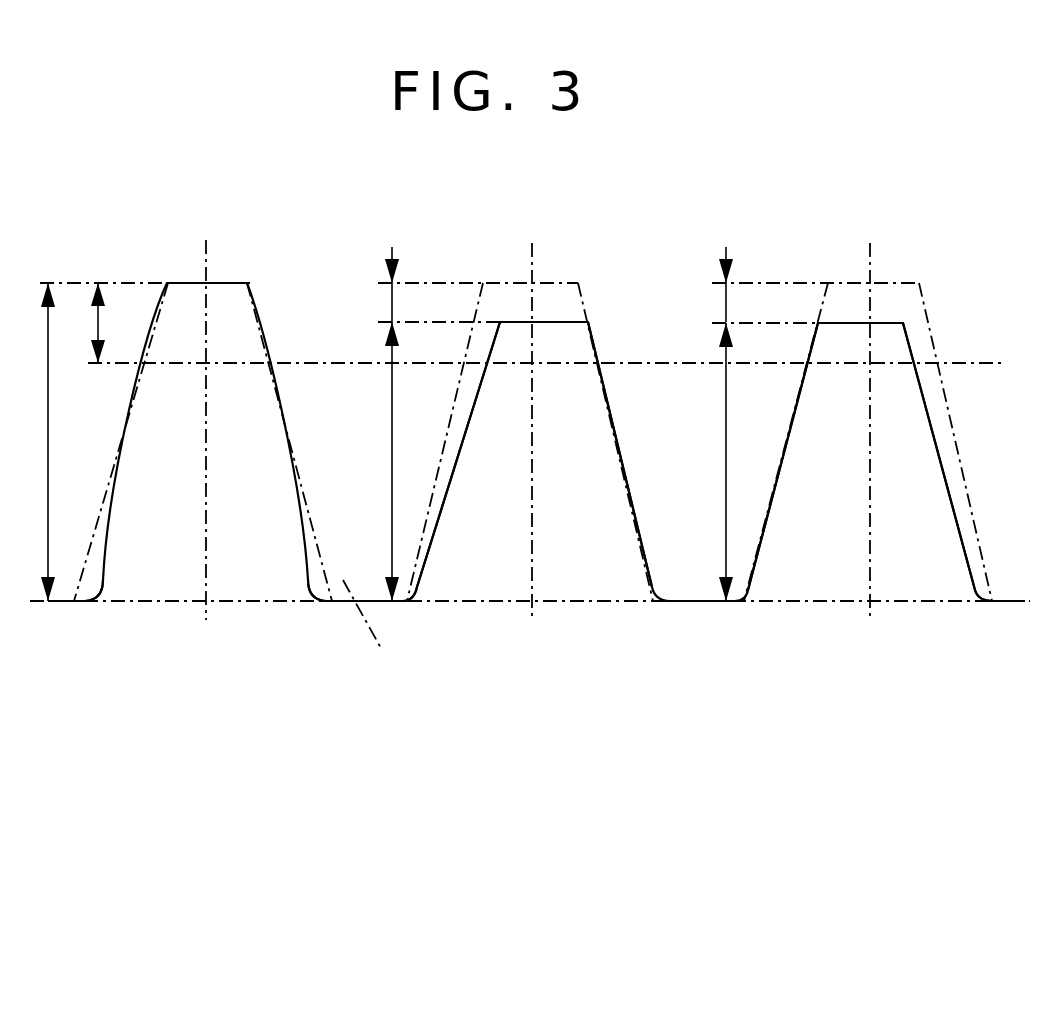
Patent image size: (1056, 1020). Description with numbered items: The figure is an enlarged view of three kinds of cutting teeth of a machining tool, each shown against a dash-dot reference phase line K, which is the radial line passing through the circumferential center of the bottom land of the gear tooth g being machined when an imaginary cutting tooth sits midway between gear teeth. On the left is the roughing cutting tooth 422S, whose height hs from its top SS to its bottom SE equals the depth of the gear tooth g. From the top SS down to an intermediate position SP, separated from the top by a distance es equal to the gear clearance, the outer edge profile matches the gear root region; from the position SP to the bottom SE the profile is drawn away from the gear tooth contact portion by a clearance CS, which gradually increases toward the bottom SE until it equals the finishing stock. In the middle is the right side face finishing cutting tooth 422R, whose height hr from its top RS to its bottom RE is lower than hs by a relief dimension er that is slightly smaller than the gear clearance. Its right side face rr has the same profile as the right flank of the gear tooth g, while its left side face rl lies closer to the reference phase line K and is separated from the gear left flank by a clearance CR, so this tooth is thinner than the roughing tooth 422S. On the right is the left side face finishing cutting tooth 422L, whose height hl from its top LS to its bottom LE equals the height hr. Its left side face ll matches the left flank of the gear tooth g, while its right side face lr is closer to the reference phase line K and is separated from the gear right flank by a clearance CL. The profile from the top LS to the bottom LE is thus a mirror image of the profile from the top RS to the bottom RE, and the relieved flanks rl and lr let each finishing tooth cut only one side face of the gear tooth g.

The reference phase line K is at (865, 265).
The roughing cutting tooth 422S is at (222, 322).
The top of roughing cutting tooth SS is at (220, 282).
The intermediate position SP is at (221, 366).
The bottom of roughing cutting tooth SE is at (193, 603).
The clearance CS is at (348, 550).
The height of roughing cutting tooth hs is at (37, 442).
The distance from top to intermediate position es is at (87, 323).
The right side face finishing cutting tooth 422R is at (583, 347).
The top of right side face finishing cutting tooth RS is at (578, 320).
The bottom of right side face finishing cutting tooth RE is at (472, 602).
The left side face of right side face finishing cutting tooth rl is at (452, 488).
The right side face of right side face finishing cutting tooth rr is at (618, 437).
The clearance CR is at (421, 427).
The height of right side face finishing cutting tooth hr is at (381, 461).
The relief dimension er is at (549, 297).
The tooth of gear g is at (366, 625).
The left side face finishing cutting tooth 422L is at (897, 343).
The top of left side face finishing cutting tooth LS is at (897, 323).
The bottom of left side face finishing cutting tooth LE is at (795, 602).
The left side face of left side face finishing cutting tooth ll is at (773, 488).
The right side face of left side face finishing cutting tooth lr is at (947, 490).
The clearance CL is at (977, 404).
The height of left side face finishing cutting tooth hl is at (716, 462).